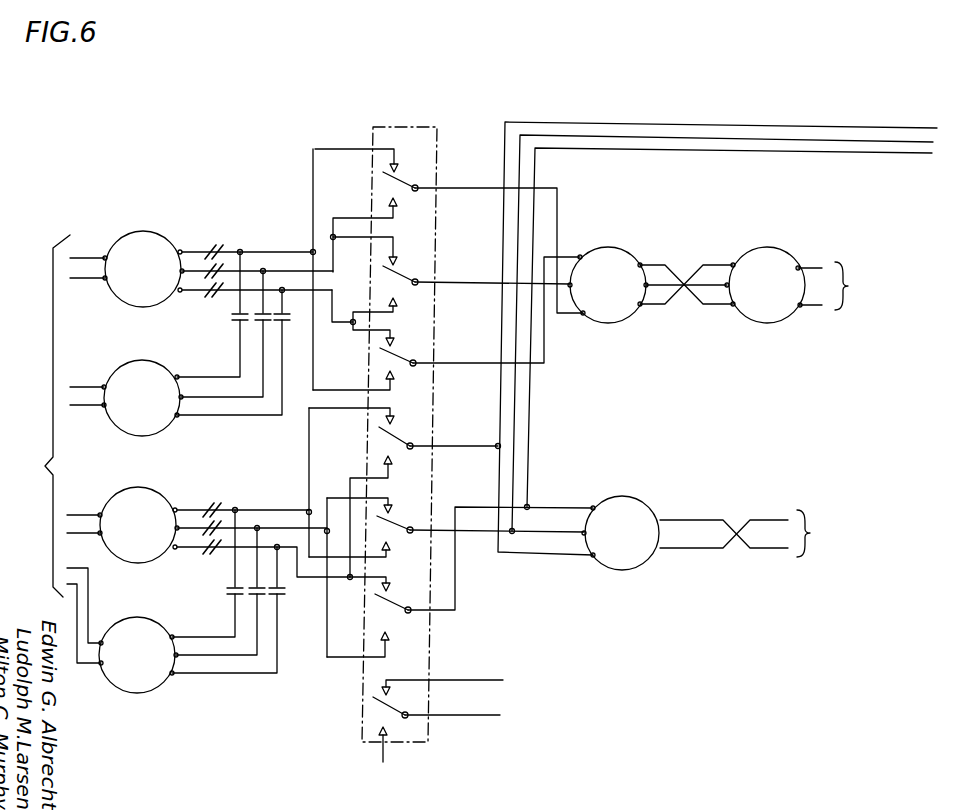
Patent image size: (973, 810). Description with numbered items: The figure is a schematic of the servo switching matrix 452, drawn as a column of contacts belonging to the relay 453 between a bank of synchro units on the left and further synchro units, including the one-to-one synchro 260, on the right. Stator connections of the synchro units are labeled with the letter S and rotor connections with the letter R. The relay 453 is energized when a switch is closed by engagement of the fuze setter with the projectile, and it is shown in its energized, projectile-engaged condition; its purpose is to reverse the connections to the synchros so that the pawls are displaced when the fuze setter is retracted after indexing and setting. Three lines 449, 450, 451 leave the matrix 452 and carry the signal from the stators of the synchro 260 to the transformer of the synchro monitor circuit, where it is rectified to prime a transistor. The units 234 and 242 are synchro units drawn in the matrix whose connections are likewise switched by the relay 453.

The switching matrix 452 is at (249, 192).
The relay 453 is at (447, 110).
The motor 234 is at (626, 251).
The motor 242 is at (793, 249).
The 1× synchro 260 is at (648, 502).
The line 449 is at (842, 127).
The line 450 is at (886, 141).
The line 451 is at (927, 155).